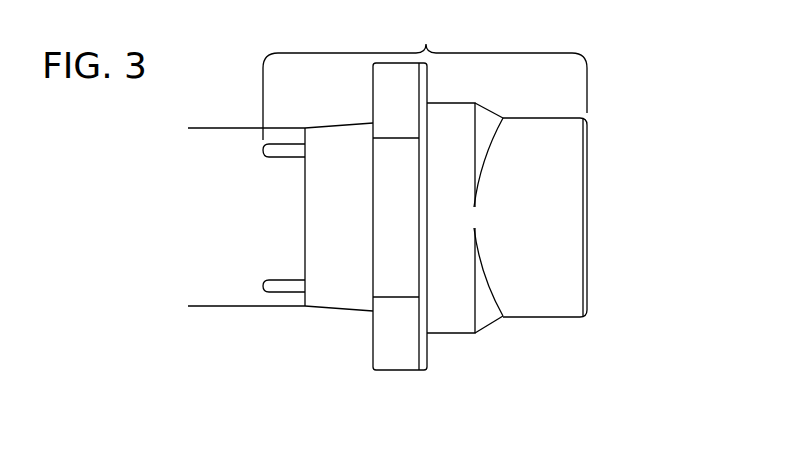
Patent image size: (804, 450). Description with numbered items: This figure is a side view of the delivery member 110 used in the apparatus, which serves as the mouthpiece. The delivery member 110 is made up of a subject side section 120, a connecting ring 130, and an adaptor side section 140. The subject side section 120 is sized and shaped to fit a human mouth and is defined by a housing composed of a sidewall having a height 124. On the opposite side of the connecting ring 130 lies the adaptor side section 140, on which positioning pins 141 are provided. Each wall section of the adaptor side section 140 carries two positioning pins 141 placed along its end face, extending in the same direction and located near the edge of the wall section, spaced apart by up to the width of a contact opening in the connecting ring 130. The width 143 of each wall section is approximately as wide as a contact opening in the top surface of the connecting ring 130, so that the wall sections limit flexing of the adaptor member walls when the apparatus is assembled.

The delivery member 110 is at (425, 78).
The subject side section 120 is at (583, 322).
The height 124 is at (427, 87).
The connecting ring 130 is at (428, 374).
The adaptor side section 140 is at (325, 311).
The positioning pins 141 is at (285, 280).
The width 143 is at (217, 129).